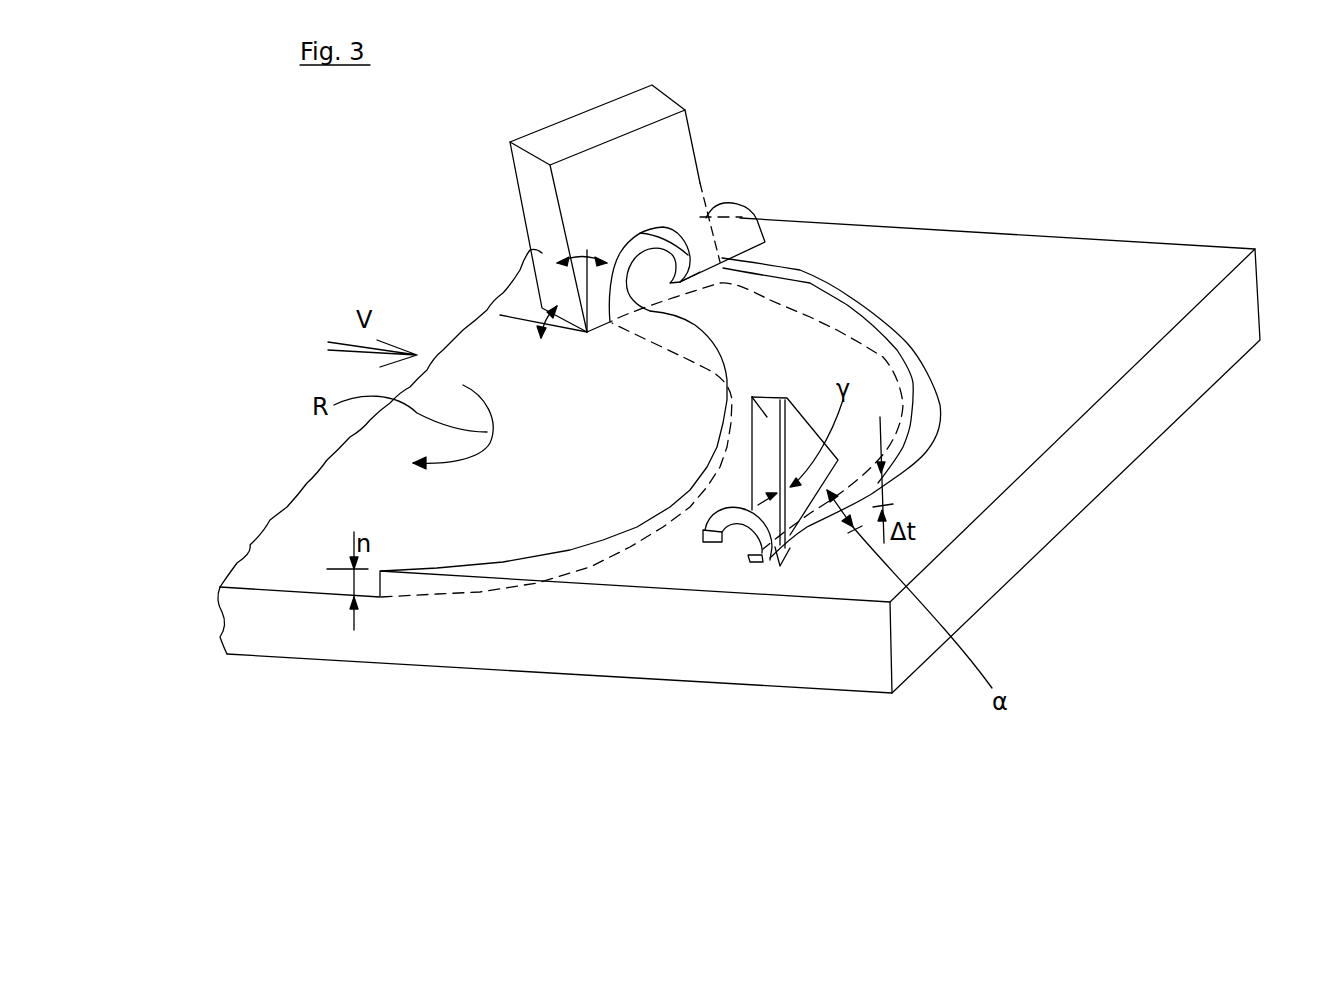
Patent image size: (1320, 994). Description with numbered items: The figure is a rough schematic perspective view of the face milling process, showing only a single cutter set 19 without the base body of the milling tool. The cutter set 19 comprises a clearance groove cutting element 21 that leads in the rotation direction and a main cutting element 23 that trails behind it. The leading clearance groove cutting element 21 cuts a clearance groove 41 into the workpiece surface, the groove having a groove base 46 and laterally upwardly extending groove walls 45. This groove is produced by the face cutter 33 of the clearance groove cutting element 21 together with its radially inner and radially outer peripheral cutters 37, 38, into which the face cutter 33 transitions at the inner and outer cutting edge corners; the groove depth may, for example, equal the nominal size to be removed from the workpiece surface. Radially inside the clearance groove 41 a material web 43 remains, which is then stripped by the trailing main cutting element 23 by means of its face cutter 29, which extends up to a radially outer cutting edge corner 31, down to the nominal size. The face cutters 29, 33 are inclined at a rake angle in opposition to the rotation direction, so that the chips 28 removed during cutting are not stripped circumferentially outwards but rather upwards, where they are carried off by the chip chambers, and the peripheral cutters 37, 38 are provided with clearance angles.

The cutter set 19 is at (787, 85).
The clearance groove cutting element 21 is at (720, 367).
The main cutting element 23 is at (690, 136).
The chips 28 is at (665, 230).
The face cutter 29 is at (652, 315).
The radially outer cutting edge corner 31 is at (668, 318).
The face cutter 33 is at (757, 558).
The radially inner peripheral cutter 37 is at (740, 547).
The radially outer peripheral cutter 38 is at (808, 537).
The clearance groove 41 is at (880, 290).
The material web 43 is at (780, 350).
The groove walls 45 is at (925, 412).
The groove base 46 is at (920, 420).